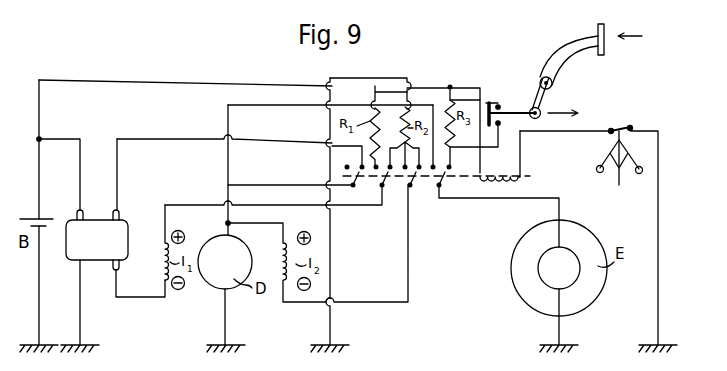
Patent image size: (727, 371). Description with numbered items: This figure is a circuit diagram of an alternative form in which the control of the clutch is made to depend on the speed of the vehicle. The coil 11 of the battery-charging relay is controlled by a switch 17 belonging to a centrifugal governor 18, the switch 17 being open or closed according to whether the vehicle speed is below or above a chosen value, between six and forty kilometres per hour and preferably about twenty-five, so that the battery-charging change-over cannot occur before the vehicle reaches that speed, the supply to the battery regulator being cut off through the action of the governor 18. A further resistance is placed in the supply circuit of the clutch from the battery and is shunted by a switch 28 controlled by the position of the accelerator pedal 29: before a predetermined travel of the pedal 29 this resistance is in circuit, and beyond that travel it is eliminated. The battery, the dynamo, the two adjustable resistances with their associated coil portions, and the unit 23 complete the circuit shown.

The coil of the battery-charging relay 11 is at (494, 170).
The switch 17 is at (624, 124).
The centrifugal governor 18 is at (608, 154).
The control box 23 is at (71, 241).
The switch 28 is at (501, 105).
The accelerator pedal 29 is at (604, 27).